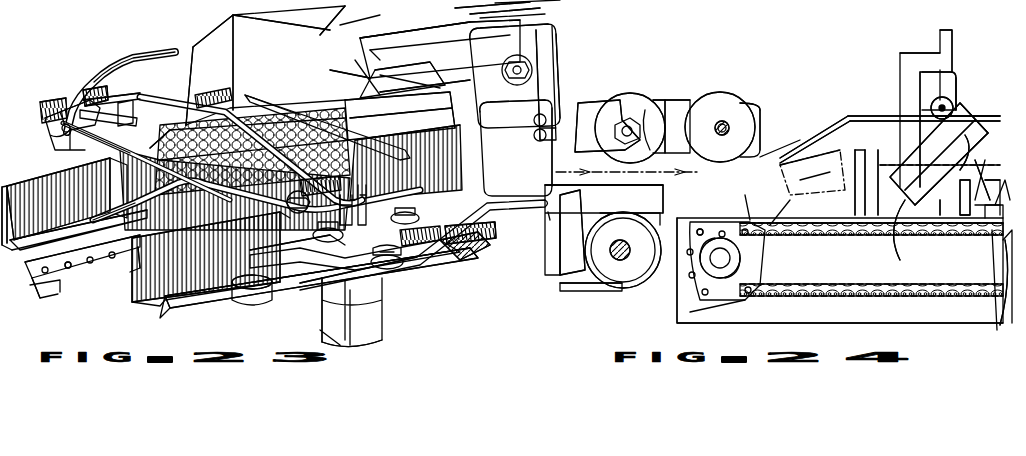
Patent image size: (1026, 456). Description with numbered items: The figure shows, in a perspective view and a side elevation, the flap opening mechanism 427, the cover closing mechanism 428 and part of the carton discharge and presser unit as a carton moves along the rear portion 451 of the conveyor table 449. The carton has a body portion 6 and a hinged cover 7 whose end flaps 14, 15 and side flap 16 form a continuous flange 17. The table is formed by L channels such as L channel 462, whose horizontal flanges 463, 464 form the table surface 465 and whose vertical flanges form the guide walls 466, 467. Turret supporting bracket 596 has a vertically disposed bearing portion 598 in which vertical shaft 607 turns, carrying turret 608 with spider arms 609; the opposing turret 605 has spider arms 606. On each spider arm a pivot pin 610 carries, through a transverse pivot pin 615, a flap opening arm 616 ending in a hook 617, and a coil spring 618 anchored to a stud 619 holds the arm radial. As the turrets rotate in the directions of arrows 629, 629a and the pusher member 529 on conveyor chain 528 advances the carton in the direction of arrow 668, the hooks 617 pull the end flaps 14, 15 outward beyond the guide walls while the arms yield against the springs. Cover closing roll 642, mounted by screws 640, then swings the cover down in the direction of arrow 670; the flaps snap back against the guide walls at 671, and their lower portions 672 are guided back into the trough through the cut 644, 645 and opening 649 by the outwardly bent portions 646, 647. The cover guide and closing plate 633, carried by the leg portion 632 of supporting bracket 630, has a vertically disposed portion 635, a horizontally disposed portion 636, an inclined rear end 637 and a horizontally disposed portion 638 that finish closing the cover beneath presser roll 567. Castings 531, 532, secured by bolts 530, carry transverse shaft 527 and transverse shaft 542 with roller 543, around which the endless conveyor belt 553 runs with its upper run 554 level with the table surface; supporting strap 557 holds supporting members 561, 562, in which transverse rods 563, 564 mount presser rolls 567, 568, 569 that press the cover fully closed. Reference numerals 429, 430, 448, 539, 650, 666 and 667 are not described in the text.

In FIG. 23, the body portion 6 is at (178, 145).
In FIG. 23, the cover 7 is at (278, 30).
In FIG. 24, the cover 7 is at (800, 151).
In FIG. 23, the end flap 14 is at (350, 85).
In FIG. 23, the end flap 15 is at (225, 91).
In FIG. 24, the end flap 15 is at (941, 172).
In FIG. 23, the side flap 16 is at (307, 43).
In FIG. 24, the side flap 16 is at (985, 135).
In FIG. 23, the continuous flange 17 is at (220, 70).
In FIG. 23, the flap opening mechanism 427 is at (395, 270).
In FIG. 23, the cover closing mechanism 428 is at (385, 45).
In FIG. 24, the cover closing mechanism 428 is at (895, 115).
In FIG. 23, the frame rail 429 is at (420, 108).
In FIG. 24, the frame rail 429 is at (600, 268).
In FIG. 24, the wheel 430 is at (720, 105).
In FIG. 23, the rail 448 is at (415, 135).
In FIG. 23, the conveyor table 449 is at (30, 200).
In FIG. 24, the conveyor table 449 is at (946, 155).
In FIG. 23, the rear portion 451 is at (112, 285).
In FIG. 24, the rear portion 451 is at (975, 225).
In FIG. 24, the L channel 462 is at (855, 218).
In FIG. 23, the horizontal flange 463 is at (80, 292).
In FIG. 24, the horizontal flange 463 is at (705, 216).
In FIG. 23, the horizontal flange 464 is at (76, 243).
In FIG. 23, the table surface 465 is at (30, 240).
In FIG. 23, the guide wall 466 is at (206, 257).
In FIG. 23, the guide wall 467 is at (102, 201).
In FIG. 24, the guide wall 467 is at (910, 225).
In FIG. 24, the transverse shaft 527 is at (722, 260).
In FIG. 23, the conveyor chain 528 is at (55, 295).
In FIG. 24, the conveyor chain 528 is at (1004, 167).
In FIG. 24, the pusher member 529 is at (994, 180).
In FIG. 24, the bolts 530 is at (765, 240).
In FIG. 23, the casting 531 is at (514, 143).
In FIG. 23, the casting 532 is at (542, 214).
In FIG. 24, the casting 532 is at (690, 301).
In FIG. 23, the support 539 is at (65, 290).
In FIG. 24, the support 539 is at (992, 292).
In FIG. 24, the transverse shaft 542 is at (608, 249).
In FIG. 24, the roller 543 is at (634, 230).
In FIG. 23, the endless conveyor belt 553 is at (455, 95).
In FIG. 24, the endless conveyor belt 553 is at (620, 262).
In FIG. 24, the upper run 554 is at (588, 207).
In FIG. 23, the supporting strap 557 is at (558, 88).
In FIG. 24, the supporting strap 557 is at (660, 174).
In FIG. 23, the supporting member 561 is at (552, 32).
In FIG. 24, the supporting member 561 is at (684, 115).
In FIG. 24, the supporting member 562 is at (598, 110).
In FIG. 23, the transverse rod 563 is at (560, 60).
In FIG. 24, the transverse rod 563 is at (760, 122).
In FIG. 24, the transverse rod 564 is at (607, 126).
In FIG. 24, the presser roll 567 is at (750, 102).
In FIG. 23, the presser roll 568 is at (505, 12).
In FIG. 24, the presser roll 568 is at (648, 136).
In FIG. 23, the presser roll 569 is at (515, 22).
In FIG. 23, the turret supporting bracket 596 is at (345, 345).
In FIG. 23, the vertically disposed bearing portion 598 is at (385, 335).
In FIG. 23, the turret 605 is at (75, 102).
In FIG. 23, the spider arms 606 is at (40, 110).
In FIG. 23, the vertical shaft 607 is at (340, 255).
In FIG. 23, the turret 608 is at (480, 250).
In FIG. 23, the spider arms 609 is at (440, 230).
In FIG. 23, the pivot pin 610 is at (240, 285).
In FIG. 23, the transverse pivot pin 615 is at (270, 290).
In FIG. 23, the flap opening arm 616 is at (240, 115).
In FIG. 23, the hook 617 is at (235, 108).
In FIG. 23, the coil spring 618 is at (420, 196).
In FIG. 23, the stud 619 is at (83, 96).
In FIG. 23, the arrow 629 is at (170, 88).
In FIG. 23, the arrow 629a is at (248, 118).
In FIG. 24, the supporting bracket 630 is at (910, 97).
In FIG. 24, the leg portion 632 is at (900, 72).
In FIG. 23, the cover guide and closing plate 633 is at (440, 39).
In FIG. 24, the cover guide and closing plate 633 is at (962, 91).
In FIG. 24, the vertically disposed portion 635 is at (957, 100).
In FIG. 23, the horizontally disposed portion 636 is at (395, 28).
In FIG. 24, the horizontally disposed portion 636 is at (880, 110).
In FIG. 23, the rear end 637 is at (372, 77).
In FIG. 24, the rear end 637 is at (850, 122).
In FIG. 24, the horizontally disposed portion 638 is at (732, 150).
In FIG. 24, the screws 640 is at (953, 110).
In FIG. 24, the cover closing roll 642 is at (975, 120).
In FIG. 23, the cut 644 is at (412, 128).
In FIG. 24, the cut 645 is at (910, 238).
In FIG. 23, the outwardly bent portion 646 is at (520, 147).
In FIG. 24, the outwardly bent portion 647 is at (860, 180).
In FIG. 24, the opening 649 is at (880, 185).
In FIG. 24, the bent plate 650 is at (948, 32).
In FIG. 23, the handle tube 666 is at (92, 225).
In FIG. 24, the chute 667 is at (810, 106).
In FIG. 24, the arrow 668 is at (920, 219).
In FIG. 23, the arrow 670 is at (268, 72).
In FIG. 24, the arrow 670 is at (950, 152).
In FIG. 24, the flap position 671 is at (926, 193).
In FIG. 24, the lower portions 672 is at (920, 206).